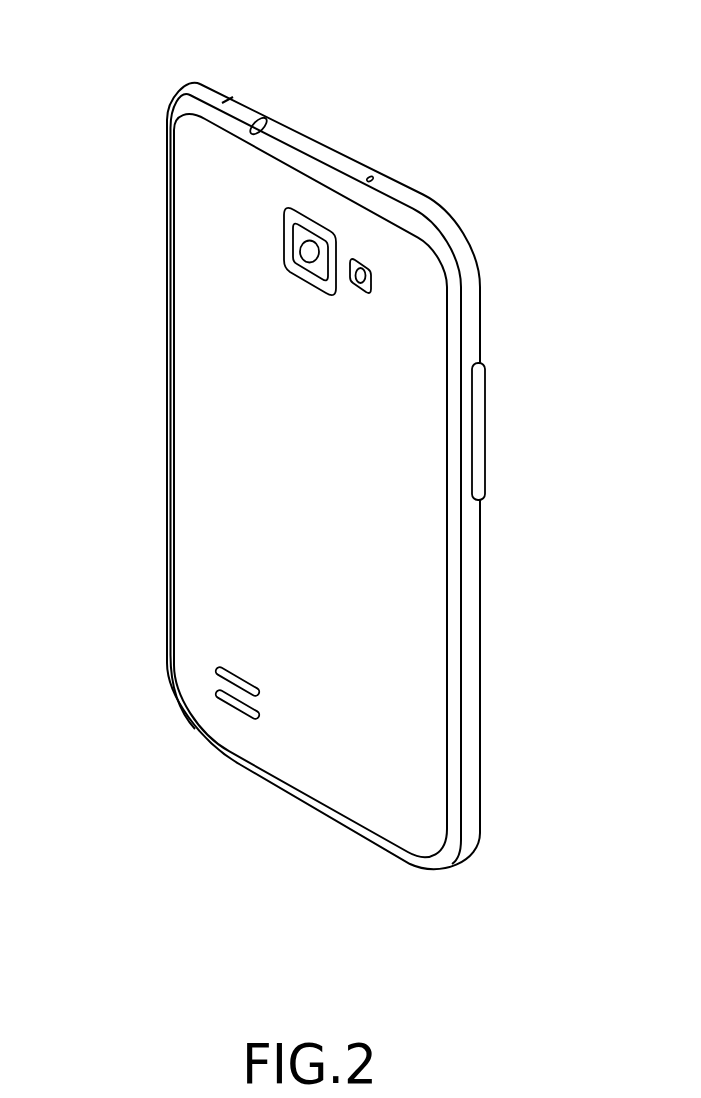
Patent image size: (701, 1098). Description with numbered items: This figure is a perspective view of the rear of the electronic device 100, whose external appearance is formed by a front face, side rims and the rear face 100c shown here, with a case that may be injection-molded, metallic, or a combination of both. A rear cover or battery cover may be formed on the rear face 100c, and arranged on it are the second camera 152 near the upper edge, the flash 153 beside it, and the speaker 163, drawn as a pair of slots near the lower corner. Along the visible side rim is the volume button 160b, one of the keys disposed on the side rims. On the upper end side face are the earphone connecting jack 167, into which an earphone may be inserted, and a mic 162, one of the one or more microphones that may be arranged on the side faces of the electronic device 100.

The electronic device 100 is at (168, 61).
The rear face 100c is at (210, 401).
The second camera 152 is at (282, 248).
The flash 153 is at (372, 281).
The volume button 160b is at (478, 436).
The mic 162 is at (372, 177).
The speaker 163 is at (213, 668).
The earphone connecting jack 167 is at (265, 114).